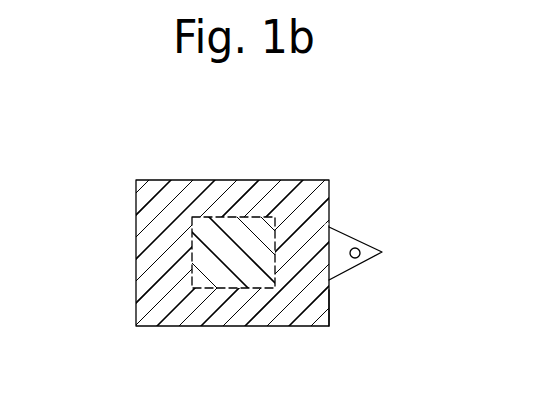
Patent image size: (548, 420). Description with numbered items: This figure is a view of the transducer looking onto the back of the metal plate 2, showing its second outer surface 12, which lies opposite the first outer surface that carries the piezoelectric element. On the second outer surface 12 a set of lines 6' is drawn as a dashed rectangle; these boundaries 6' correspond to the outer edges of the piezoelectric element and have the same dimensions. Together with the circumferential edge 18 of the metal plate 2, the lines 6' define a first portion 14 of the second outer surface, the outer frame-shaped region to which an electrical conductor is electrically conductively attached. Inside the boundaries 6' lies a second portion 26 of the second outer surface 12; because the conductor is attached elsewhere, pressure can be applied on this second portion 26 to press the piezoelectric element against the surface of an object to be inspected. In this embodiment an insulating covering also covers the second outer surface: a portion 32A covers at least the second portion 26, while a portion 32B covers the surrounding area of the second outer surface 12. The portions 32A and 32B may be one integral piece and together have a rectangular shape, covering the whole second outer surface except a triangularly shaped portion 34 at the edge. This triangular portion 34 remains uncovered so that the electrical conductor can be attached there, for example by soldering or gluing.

The metal plate 2 is at (307, 193).
The lines (boundaries) 6' is at (230, 249).
The second outer surface 12 is at (329, 305).
The first portion of the second outer surface 14 is at (150, 187).
The circumferential edge 18 is at (182, 182).
The second portion of the second outer surface 26 is at (202, 275).
The portion of the insulating covering 32A is at (253, 227).
The portion of the insulating covering 32B is at (314, 224).
The triangularly shaped portion 34 is at (360, 258).